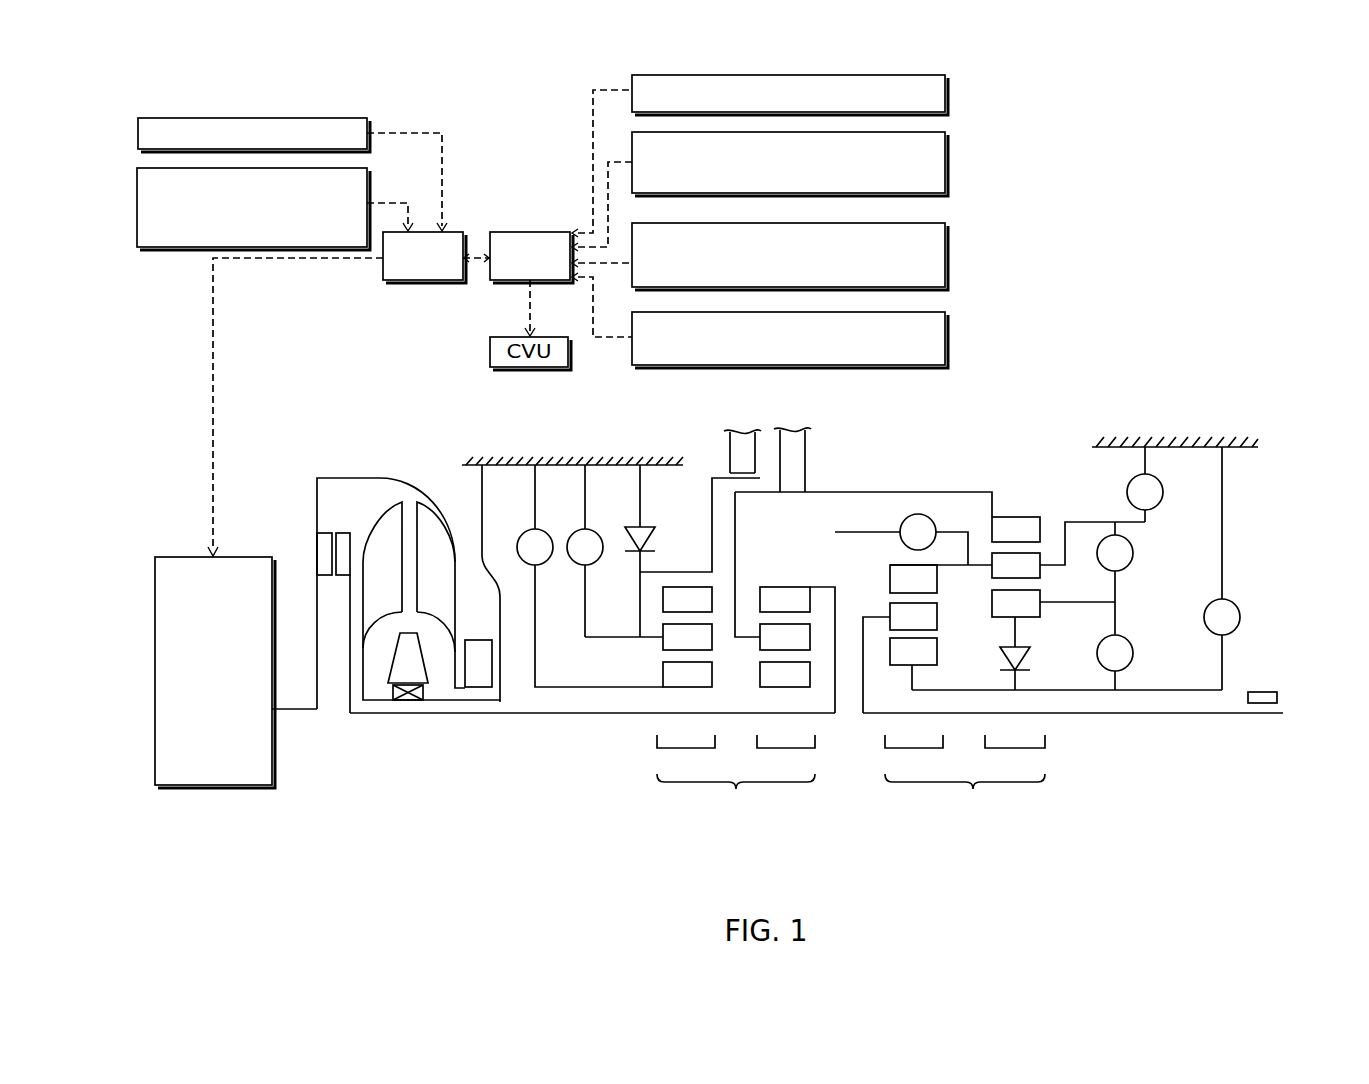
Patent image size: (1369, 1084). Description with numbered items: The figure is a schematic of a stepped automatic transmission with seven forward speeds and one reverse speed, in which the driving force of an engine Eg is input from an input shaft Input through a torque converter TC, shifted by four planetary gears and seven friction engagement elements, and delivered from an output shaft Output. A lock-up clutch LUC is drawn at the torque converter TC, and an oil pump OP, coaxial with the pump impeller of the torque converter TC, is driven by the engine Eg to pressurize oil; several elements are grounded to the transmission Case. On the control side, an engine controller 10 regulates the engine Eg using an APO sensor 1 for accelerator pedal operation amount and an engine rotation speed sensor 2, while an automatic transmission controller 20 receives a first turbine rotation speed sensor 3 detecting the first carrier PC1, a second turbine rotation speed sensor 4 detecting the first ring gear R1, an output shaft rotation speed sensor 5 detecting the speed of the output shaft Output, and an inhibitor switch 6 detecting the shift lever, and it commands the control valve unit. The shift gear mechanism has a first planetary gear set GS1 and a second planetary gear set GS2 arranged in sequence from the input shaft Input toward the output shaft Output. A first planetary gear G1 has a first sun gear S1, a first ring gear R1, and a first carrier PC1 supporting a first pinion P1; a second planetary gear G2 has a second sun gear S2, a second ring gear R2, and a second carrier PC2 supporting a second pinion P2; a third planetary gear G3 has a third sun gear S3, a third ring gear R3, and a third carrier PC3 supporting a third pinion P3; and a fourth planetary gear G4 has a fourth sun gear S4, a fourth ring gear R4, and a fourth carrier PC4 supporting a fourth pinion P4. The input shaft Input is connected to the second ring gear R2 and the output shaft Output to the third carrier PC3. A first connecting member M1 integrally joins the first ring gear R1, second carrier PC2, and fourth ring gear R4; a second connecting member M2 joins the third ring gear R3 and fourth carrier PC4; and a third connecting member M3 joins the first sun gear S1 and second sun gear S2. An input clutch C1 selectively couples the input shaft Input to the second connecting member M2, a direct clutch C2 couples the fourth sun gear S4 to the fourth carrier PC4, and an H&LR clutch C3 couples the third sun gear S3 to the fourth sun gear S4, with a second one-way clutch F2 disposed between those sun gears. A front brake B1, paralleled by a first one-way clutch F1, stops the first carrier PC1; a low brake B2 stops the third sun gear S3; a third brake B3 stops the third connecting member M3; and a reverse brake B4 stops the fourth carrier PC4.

The APO sensor 1 is at (138, 132).
The engine rotation speed sensor 2 is at (137, 217).
The first turbine rotation speed sensor 3 is at (945, 162).
The second turbine rotation speed sensor 4 is at (945, 250).
The output shaft rotation speed sensor 5 is at (945, 328).
The inhibitor switch 6 is at (945, 88).
The engine controller (ECU) 10 is at (419, 283).
The automatic transmission controller (ATCU) 20 is at (516, 232).
The engine Eg is at (247, 557).
The torque converter TC is at (400, 464).
The lock-up clutch LUC is at (334, 528).
The oil pump OP is at (478, 640).
The case Case is at (571, 466).
The input shaft Input is at (501, 715).
The output shaft Output is at (1137, 714).
The front brake B1 is at (585, 551).
The low brake B2 is at (1222, 568).
The 2346 brake B3 is at (590, 576).
The reverse brake B4 is at (1145, 484).
The input clutch C1 is at (901, 539).
The direct clutch C2 is at (1115, 578).
The H&LR clutch C3 is at (1115, 662).
The first one-way clutch F1 is at (650, 527).
The second one-way clutch F2 is at (1028, 651).
The first ring gear R1 is at (687, 599).
The first pinion P1 is at (687, 637).
The first sun gear S1 is at (687, 674).
The first carrier PC1 is at (650, 637).
The second ring gear R2 is at (785, 599).
The second pinion P2 is at (785, 637).
The second sun gear S2 is at (785, 674).
The second carrier PC2 is at (741, 637).
The third ring gear R3 is at (913, 579).
The third pinion P3 is at (913, 616).
The third sun gear S3 is at (913, 664).
The third carrier PC3 is at (870, 615).
The fourth ring gear R4 is at (1016, 529).
The fourth pinion P4 is at (1016, 565).
The fourth sun gear S4 is at (1053, 603).
The fourth carrier PC4 is at (1062, 568).
The first connecting member M1 is at (905, 492).
The second connecting member M2 is at (952, 567).
The third connecting member M3 is at (737, 688).
The first planetary gear G1 is at (686, 753).
The second planetary gear G2 is at (786, 753).
The third planetary gear G3 is at (914, 753).
The fourth planetary gear G4 is at (1015, 753).
The first planetary gear set GS1 is at (736, 793).
The second planetary gear set GS2 is at (965, 793).